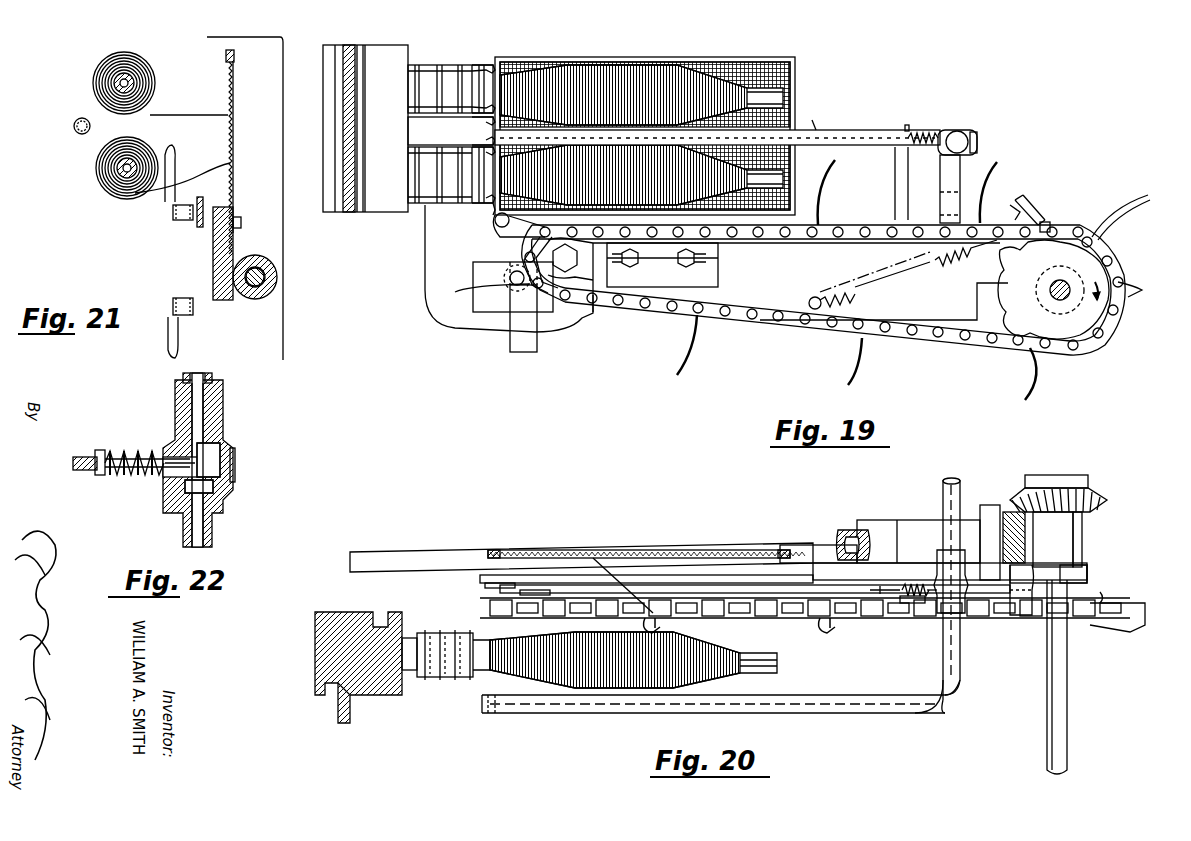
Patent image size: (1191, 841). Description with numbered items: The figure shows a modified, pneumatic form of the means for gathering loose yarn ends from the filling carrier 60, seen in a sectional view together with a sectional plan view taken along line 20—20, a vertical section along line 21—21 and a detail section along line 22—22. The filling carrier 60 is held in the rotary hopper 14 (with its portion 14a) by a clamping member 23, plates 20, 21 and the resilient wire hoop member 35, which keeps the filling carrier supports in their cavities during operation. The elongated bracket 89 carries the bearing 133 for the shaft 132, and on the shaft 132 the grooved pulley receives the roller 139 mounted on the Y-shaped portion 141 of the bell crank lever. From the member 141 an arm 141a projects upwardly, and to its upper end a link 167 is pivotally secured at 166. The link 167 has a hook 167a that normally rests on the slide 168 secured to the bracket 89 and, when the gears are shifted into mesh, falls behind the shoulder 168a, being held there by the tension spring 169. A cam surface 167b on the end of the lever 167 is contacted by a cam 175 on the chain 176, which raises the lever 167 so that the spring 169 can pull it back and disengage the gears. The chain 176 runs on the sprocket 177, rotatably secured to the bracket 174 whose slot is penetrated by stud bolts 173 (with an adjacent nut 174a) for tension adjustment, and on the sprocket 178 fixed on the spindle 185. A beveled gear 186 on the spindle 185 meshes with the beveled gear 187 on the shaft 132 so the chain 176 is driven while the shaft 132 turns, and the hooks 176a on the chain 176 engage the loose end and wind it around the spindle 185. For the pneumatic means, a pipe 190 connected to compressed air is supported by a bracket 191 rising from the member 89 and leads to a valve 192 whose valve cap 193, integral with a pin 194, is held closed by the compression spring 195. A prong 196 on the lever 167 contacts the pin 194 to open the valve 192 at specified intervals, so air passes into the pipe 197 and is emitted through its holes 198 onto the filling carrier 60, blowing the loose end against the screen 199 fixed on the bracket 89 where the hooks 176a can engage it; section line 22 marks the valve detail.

In FIG. 19, the rotary hopper 14 is at (323, 82).
In FIG. 20, the rotary hopper 14 is at (315, 645).
In FIG. 20, the head block portion 14a is at (335, 598).
In FIG. 19, the plate 20 is at (322, 130).
In FIG. 19, the plate 21 is at (757, 53).
In FIG. 19, the section line 22 is at (885, 155).
In FIG. 19, the clamping member 23 is at (432, 65).
In FIG. 20, the clamping member 23 is at (417, 680).
In FIG. 19, the resilient wire hoop member 35 is at (357, 47).
In FIG. 20, the resilient wire hoop member 35 is at (350, 705).
In FIG. 19, the filling carrier 60 is at (668, 70).
In FIG. 20, the filling carrier 60 is at (518, 636).
In FIG. 21, the filling carrier 60 is at (137, 58).
In FIG. 19, the elongated bracket 89 is at (800, 281).
In FIG. 20, the elongated bracket 89 is at (445, 555).
In FIG. 21, the elongated bracket 89 is at (213, 263).
In FIG. 20, the shaft 132 is at (840, 530).
In FIG. 21, the shaft 132 is at (258, 300).
In FIG. 20, the bearing 133 is at (925, 505).
In FIG. 19, the roller 139 is at (510, 280).
In FIG. 19, the Y-shaped portion 141 is at (510, 346).
In FIG. 19, the arm 141a is at (495, 262).
In FIG. 20, the arm 141a is at (480, 578).
In FIG. 19, the pivot 166 is at (494, 222).
In FIG. 20, the pivot 166 is at (485, 588).
In FIG. 19, the link 167 is at (516, 237).
In FIG. 20, the link 167 is at (515, 595).
In FIG. 21, the link 167 is at (199, 228).
In FIG. 19, the hook 167a is at (1035, 205).
In FIG. 20, the hook 167a is at (1057, 539).
In FIG. 19, the cam surface 167b is at (1015, 215).
In FIG. 20, the cam surface 167b is at (1018, 617).
In FIG. 20, the slide 168 is at (818, 560).
In FIG. 19, the shoulder 168a is at (1060, 220).
In FIG. 20, the shoulder 168a is at (1075, 570).
In FIG. 19, the tension spring 169 is at (903, 274).
In FIG. 19, the stud bolts 173 is at (680, 256).
In FIG. 19, the bracket 174 is at (718, 270).
In FIG. 19, the nut 174a is at (718, 262).
In FIG. 19, the cam 175 is at (1140, 296).
In FIG. 20, the cam 175 is at (1140, 600).
In FIG. 19, the chain 176 is at (945, 337).
In FIG. 20, the chain 176 is at (772, 618).
In FIG. 21, the chain 176 is at (173, 215).
In FIG. 19, the hooks 176a is at (870, 360).
In FIG. 20, the hooks 176a is at (825, 633).
In FIG. 21, the hooks 176a is at (167, 192).
In FIG. 19, the sprocket 177 is at (570, 267).
In FIG. 19, the sprocket 178 is at (1030, 270).
In FIG. 19, the spindle 185 is at (1049, 292).
In FIG. 20, the spindle 185 is at (1067, 668).
In FIG. 20, the beveled gear 186 is at (1092, 490).
In FIG. 20, the beveled gear 187 is at (993, 505).
In FIG. 20, the pipe 190 is at (953, 478).
In FIG. 22, the pipe 190 is at (213, 375).
In FIG. 19, the bracket 191 is at (940, 184).
In FIG. 20, the bracket 191 is at (937, 556).
In FIG. 22, the bracket 191 is at (225, 402).
In FIG. 19, the valve 192 is at (965, 131).
In FIG. 20, the valve 192 is at (951, 581).
In FIG. 22, the valve 192 is at (232, 442).
In FIG. 22, the valve cap 193 is at (235, 484).
In FIG. 20, the pin 194 is at (912, 620).
In FIG. 22, the pin 194 is at (153, 457).
In FIG. 19, the compression spring 195 is at (918, 128).
In FIG. 20, the compression spring 195 is at (900, 585).
In FIG. 22, the compression spring 195 is at (146, 477).
In FIG. 19, the prong 196 is at (895, 187).
In FIG. 20, the prong 196 is at (868, 590).
In FIG. 22, the prong 196 is at (92, 456).
In FIG. 19, the pipe 197 is at (838, 131).
In FIG. 20, the pipe 197 is at (910, 703).
In FIG. 21, the pipe 197 is at (75, 128).
In FIG. 22, the pipe 197 is at (212, 528).
In FIG. 19, the holes 198 is at (809, 117).
In FIG. 20, the holes 198 is at (535, 706).
In FIG. 21, the holes 198 is at (90, 127).
In FIG. 19, the screen 199 is at (812, 130).
In FIG. 20, the screen 199 is at (593, 558).
In FIG. 21, the screen 199 is at (233, 90).